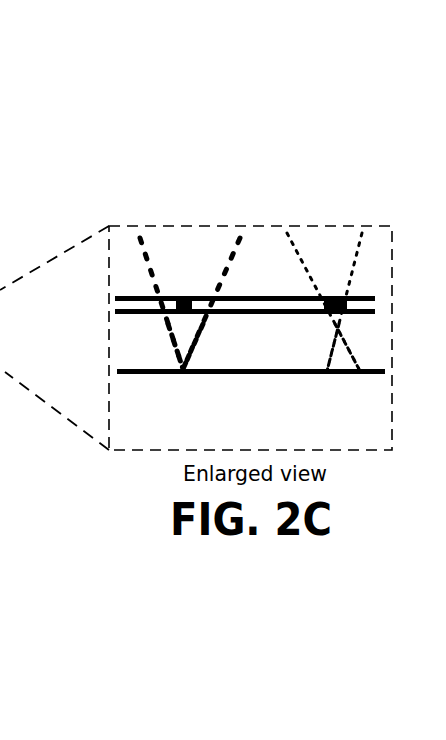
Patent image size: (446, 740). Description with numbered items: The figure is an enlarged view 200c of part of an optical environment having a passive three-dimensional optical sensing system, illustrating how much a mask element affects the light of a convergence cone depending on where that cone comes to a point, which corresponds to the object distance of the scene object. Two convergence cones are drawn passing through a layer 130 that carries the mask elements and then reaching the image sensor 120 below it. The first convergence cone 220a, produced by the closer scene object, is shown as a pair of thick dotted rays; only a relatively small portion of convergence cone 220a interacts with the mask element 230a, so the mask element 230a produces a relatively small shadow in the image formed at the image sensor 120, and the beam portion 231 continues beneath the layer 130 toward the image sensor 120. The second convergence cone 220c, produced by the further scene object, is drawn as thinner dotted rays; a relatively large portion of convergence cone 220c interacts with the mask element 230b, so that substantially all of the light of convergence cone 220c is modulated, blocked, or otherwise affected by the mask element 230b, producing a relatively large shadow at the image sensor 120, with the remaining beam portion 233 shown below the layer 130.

The enlarged view of display structure 200c is at (228, 90).
The image sensor 120 is at (243, 376).
The light-emitting layer 130 is at (141, 318).
The convergence cone 220a is at (154, 256).
The convergence cone 220c is at (355, 263).
The mask element 230a is at (178, 296).
The mask element 230b is at (330, 295).
The first beam portion below layer 231 is at (205, 328).
The second beam portion below layer 233 is at (353, 347).